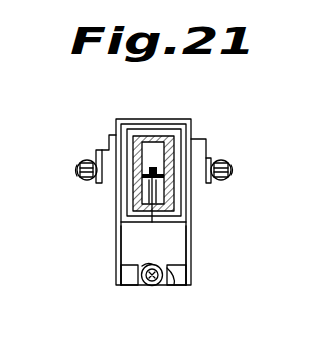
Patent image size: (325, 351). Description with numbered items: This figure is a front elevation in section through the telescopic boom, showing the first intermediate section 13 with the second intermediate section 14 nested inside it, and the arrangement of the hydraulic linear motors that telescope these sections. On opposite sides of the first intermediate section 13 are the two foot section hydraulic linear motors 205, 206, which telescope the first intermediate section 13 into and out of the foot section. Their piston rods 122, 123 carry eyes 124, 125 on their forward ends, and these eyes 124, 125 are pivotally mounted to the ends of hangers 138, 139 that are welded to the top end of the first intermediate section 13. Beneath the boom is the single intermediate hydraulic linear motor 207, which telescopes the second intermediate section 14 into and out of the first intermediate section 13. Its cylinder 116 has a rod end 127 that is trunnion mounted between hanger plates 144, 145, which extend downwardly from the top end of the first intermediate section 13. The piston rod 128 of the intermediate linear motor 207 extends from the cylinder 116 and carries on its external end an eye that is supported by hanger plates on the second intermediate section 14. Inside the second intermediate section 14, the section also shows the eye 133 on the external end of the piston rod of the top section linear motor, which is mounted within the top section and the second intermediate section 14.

The first intermediate section 13 is at (154, 119).
The second intermediate section 14 is at (179, 139).
The eye 133 is at (153, 238).
The hanger plate 144 is at (115, 242).
The hanger plate 145 is at (192, 242).
The piston rod 128 is at (151, 287).
The cylinder 116 is at (162, 266).
The intermediate hydraulic linear motor 207 is at (148, 265).
The rod end 127 is at (165, 269).
The hanger 138 is at (108, 148).
The piston rod 122 is at (77, 170).
The eye 124 is at (81, 182).
The foot section hydraulic linear motor 205 is at (79, 177).
The hanger 139 is at (211, 149).
The piston rod 123 is at (228, 162).
The eye 125 is at (222, 183).
The foot section hydraulic linear motor 206 is at (228, 180).